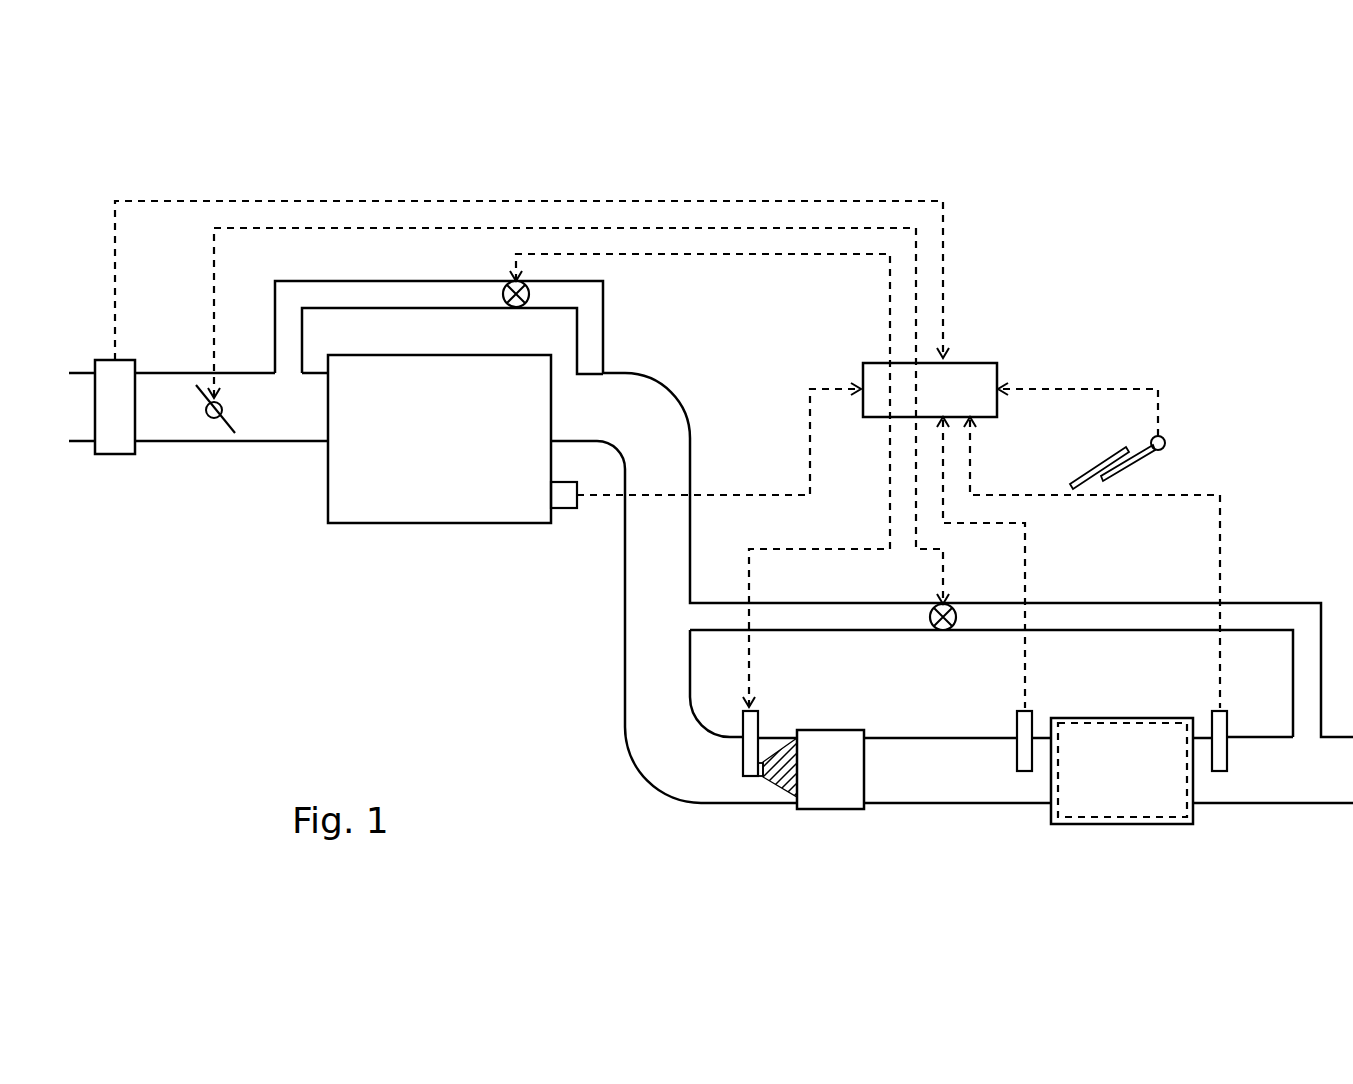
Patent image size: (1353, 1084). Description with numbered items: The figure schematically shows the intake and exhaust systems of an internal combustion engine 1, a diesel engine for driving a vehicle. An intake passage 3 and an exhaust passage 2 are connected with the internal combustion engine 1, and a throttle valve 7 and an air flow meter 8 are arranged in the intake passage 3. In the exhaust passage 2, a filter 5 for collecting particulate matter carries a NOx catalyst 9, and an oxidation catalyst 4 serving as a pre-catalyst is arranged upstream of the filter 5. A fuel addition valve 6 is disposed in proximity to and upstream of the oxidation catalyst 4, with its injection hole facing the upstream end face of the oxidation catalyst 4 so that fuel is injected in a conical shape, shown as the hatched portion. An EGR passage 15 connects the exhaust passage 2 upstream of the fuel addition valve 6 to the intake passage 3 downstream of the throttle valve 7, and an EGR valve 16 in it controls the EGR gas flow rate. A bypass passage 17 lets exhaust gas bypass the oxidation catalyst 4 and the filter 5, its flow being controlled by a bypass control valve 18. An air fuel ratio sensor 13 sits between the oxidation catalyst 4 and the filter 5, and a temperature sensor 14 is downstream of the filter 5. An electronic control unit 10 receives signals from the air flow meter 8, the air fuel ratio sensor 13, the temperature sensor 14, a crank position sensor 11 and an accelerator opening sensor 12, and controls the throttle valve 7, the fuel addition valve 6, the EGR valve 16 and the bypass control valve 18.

The internal combustion engine 1 is at (446, 523).
The exhaust passage 2 is at (622, 683).
The intake passage 3 is at (275, 441).
The oxidation catalyst 4 is at (832, 810).
The filter 5 is at (1125, 825).
The fuel addition valve 6 is at (760, 723).
The throttle valve 7 is at (207, 415).
The air flow meter 8 is at (118, 454).
The NOx catalyst 9 is at (1125, 725).
The electronic control unit (ECU) 10 is at (970, 362).
The crank position sensor 11 is at (564, 508).
The accelerator opening sensor 12 is at (1167, 442).
The air fuel ratio sensor 13 is at (1035, 722).
The temperature sensor 14 is at (1230, 722).
The EGR passage 15 is at (380, 280).
The EGR valve 16 is at (500, 293).
The bypass passage 17 is at (1095, 603).
The bypass control valve 18 is at (930, 613).